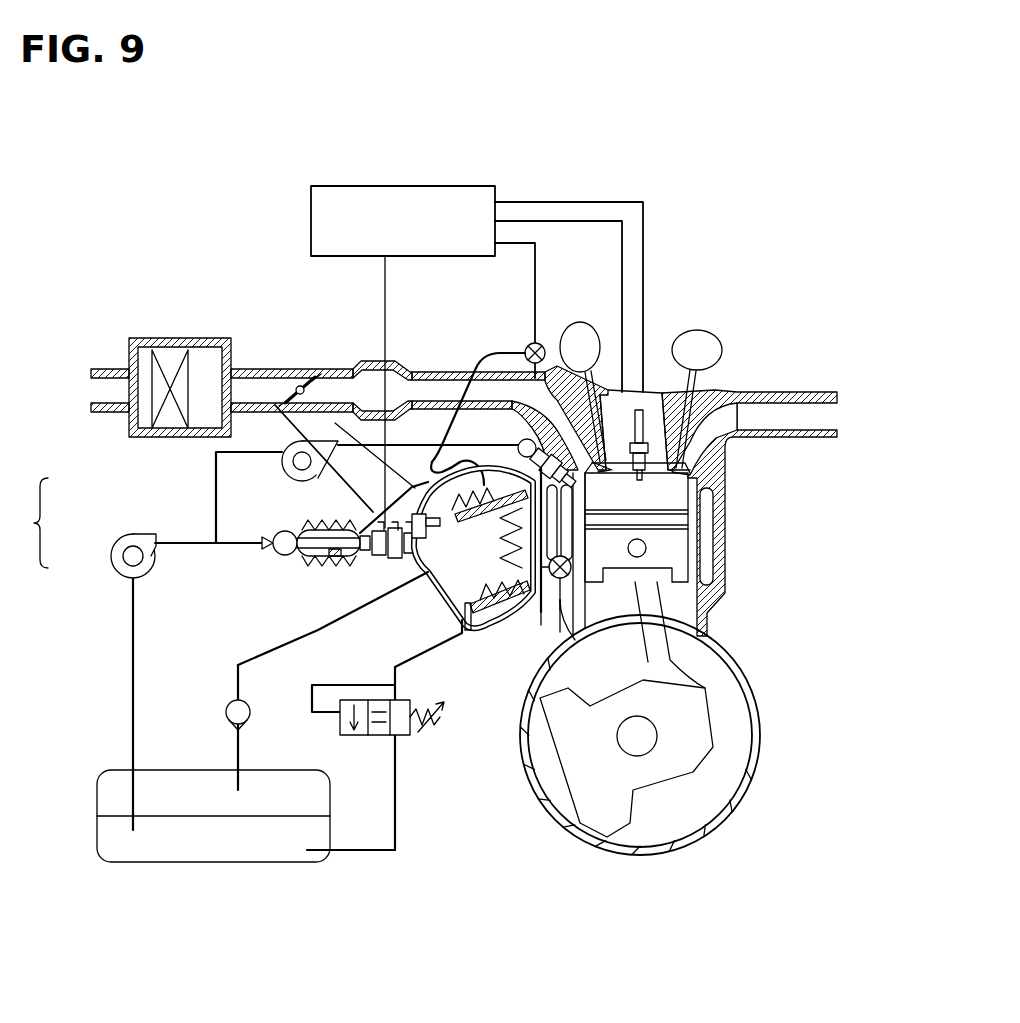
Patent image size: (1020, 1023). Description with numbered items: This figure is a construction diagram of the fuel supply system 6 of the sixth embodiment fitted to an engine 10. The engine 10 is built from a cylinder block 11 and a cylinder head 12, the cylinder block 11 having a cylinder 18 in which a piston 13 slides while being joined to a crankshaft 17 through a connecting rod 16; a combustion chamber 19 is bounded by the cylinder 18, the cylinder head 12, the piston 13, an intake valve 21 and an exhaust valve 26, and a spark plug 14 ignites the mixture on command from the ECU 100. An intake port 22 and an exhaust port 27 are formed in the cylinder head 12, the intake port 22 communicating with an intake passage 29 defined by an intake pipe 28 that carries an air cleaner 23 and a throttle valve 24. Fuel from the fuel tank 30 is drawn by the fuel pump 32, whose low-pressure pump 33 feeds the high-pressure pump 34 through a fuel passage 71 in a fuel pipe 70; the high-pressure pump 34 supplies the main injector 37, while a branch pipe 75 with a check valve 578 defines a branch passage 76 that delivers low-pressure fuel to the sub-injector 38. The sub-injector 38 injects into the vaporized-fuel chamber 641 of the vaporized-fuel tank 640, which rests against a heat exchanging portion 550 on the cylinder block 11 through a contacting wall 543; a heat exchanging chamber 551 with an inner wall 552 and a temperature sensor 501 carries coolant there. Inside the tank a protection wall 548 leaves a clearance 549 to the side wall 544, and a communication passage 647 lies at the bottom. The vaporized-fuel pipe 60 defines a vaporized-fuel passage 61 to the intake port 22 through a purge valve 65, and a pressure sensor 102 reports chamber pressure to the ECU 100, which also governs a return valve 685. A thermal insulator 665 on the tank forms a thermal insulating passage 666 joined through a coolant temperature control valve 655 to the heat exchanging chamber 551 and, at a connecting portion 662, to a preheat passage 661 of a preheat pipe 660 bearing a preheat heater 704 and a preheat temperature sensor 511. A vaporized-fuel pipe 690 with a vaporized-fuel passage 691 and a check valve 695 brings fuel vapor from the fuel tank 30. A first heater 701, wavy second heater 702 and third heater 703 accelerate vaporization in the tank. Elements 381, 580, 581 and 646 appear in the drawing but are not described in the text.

The fuel supply system 6 is at (208, 917).
The engine 10 is at (728, 882).
The cylinder block 11 is at (709, 612).
The cylinder head 12 is at (727, 461).
The piston 13 is at (680, 550).
The spark plug 14 is at (641, 410).
The connecting rod 16 is at (668, 662).
The crankshaft 17 is at (648, 742).
The cylinder 18 is at (688, 512).
The combustion chamber 19 is at (676, 488).
The intake valve 21 is at (590, 328).
The intake port 22 is at (628, 262).
The air cleaner 23 is at (170, 340).
The throttle valve 24 is at (298, 386).
The exhaust valve 26 is at (705, 400).
The exhaust port 27 is at (803, 398).
The intake pipe 28 is at (101, 369).
The intake passage 29 is at (128, 370).
The fuel tank 30 is at (305, 862).
The fuel pump 32 is at (26, 523).
The low-pressure pump 33 is at (111, 556).
The high-pressure pump 34 is at (282, 452).
The main injector 37 is at (549, 400).
The sub-injector 38 is at (352, 629).
The vaporized-fuel pipe 60 is at (435, 372).
The vaporized-fuel passage 61 is at (488, 402).
The purge valve 65 is at (537, 342).
The fuel pipe 70 is at (133, 741).
The fuel passage 71 is at (133, 712).
The branch pipe 75 is at (227, 540).
The branch passage 76 is at (236, 545).
The electronic control unit 100 is at (311, 221).
The pressure sensor 102 is at (214, 482).
The check valve 381 is at (318, 518).
The temperature sensor 501 is at (690, 570).
The preheat temperature sensor 511 is at (382, 566).
The contacting wall 543 is at (470, 604).
The side wall 544 is at (340, 442).
The protection wall 548 is at (476, 368).
The clearance 549 is at (412, 556).
The heat exchanging portion 550 is at (712, 586).
The heat exchanging chamber 551 is at (526, 400).
The inner wall 552 is at (702, 604).
The check valve 578 is at (290, 565).
The return pipe 580 is at (372, 852).
The return pipe 581 is at (397, 836).
The vaporized-fuel tank 640 is at (500, 640).
The vaporized-fuel chamber 641 is at (440, 598).
The air pipe 646 is at (500, 352).
The communication passage 647 is at (468, 630).
The coolant temperature control valve 655 is at (590, 600).
The preheat pipe 660 is at (275, 405).
The preheat passage 661 is at (360, 522).
The connecting portion 662 is at (370, 362).
The thermal insulator 665 is at (495, 633).
The thermal insulating passage 666 is at (507, 600).
The return valve 685 is at (366, 736).
The vaporized-fuel pipe 690 is at (236, 695).
The vaporized-fuel passage 691 is at (236, 668).
The check valve 695 is at (226, 716).
The first heater 701 is at (532, 600).
The second heater 702 is at (353, 683).
The third heater 703 is at (386, 330).
The preheat heater 704 is at (372, 604).